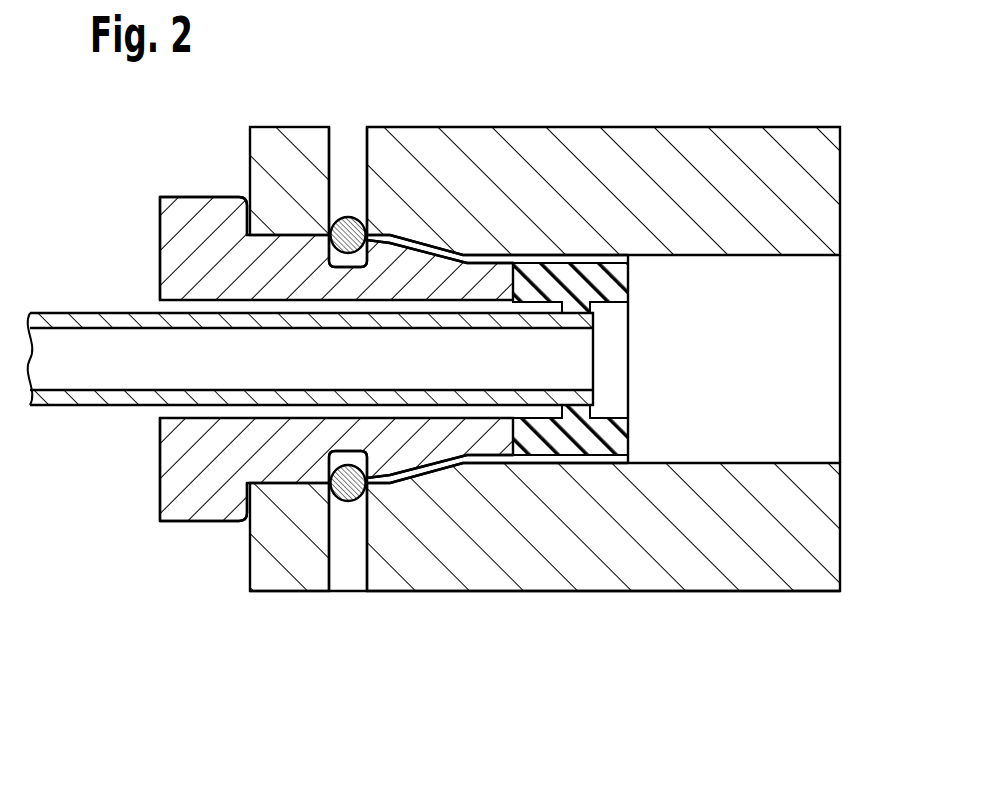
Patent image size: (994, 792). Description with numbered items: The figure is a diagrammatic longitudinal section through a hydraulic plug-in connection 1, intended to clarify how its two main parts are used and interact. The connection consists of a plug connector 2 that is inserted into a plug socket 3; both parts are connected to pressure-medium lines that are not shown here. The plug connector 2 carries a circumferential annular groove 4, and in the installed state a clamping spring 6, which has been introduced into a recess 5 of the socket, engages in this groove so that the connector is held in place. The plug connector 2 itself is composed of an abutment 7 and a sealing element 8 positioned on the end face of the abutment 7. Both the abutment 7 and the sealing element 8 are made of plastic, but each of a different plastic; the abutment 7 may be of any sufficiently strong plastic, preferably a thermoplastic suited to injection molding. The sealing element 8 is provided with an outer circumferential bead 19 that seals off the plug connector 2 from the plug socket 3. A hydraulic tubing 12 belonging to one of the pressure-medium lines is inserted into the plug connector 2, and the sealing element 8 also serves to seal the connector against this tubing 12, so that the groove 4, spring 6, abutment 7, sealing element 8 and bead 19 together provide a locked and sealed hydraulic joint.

The hydraulic plug-in connection 1 is at (295, 618).
The plug connector 2 is at (155, 483).
The plug socket 3 is at (712, 570).
The annular groove 4 is at (353, 270).
The recess 5 is at (346, 145).
The clamping spring 6 is at (346, 500).
The abutment 7 is at (192, 459).
The sealing element 8 is at (628, 440).
The hydraulic tubing 12 is at (80, 322).
The outer circumferential bead 19 is at (570, 463).